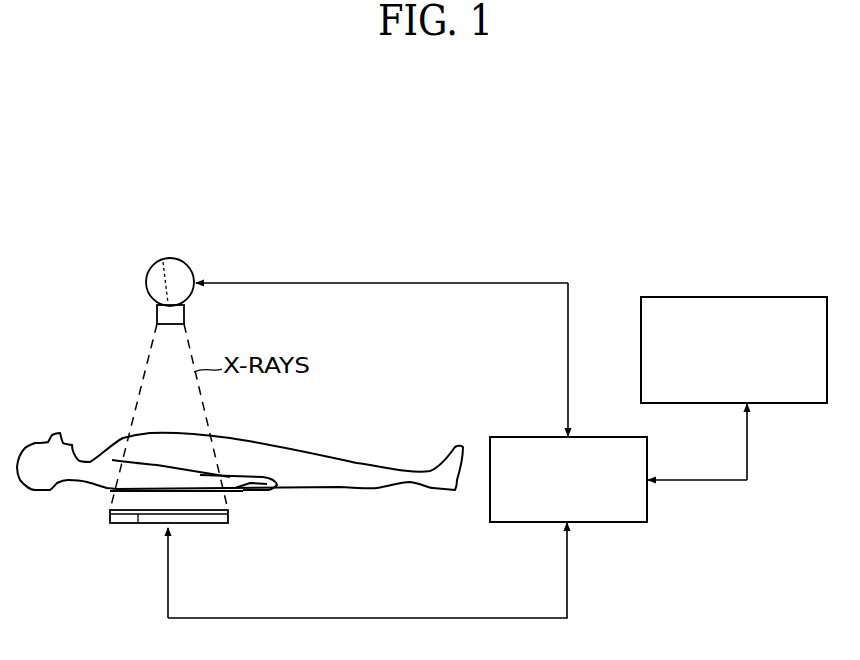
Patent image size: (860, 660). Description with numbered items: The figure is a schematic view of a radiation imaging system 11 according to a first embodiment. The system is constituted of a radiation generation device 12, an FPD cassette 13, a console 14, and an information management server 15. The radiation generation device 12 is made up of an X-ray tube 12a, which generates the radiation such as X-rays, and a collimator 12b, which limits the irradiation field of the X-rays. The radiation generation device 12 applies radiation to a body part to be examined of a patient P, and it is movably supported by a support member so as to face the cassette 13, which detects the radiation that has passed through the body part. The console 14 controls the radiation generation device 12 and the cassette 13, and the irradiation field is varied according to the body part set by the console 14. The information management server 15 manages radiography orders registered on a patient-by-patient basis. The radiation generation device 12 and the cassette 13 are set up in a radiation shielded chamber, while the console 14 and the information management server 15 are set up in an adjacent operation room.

The radiation imaging system 11 is at (498, 178).
The radiation generation device 12 is at (141, 262).
The X-ray tube 12a is at (149, 285).
The collimator 12b is at (157, 319).
The FPD cassette 13 is at (211, 525).
The console 14 is at (600, 437).
The information management server 15 is at (780, 297).
The patient P is at (312, 455).